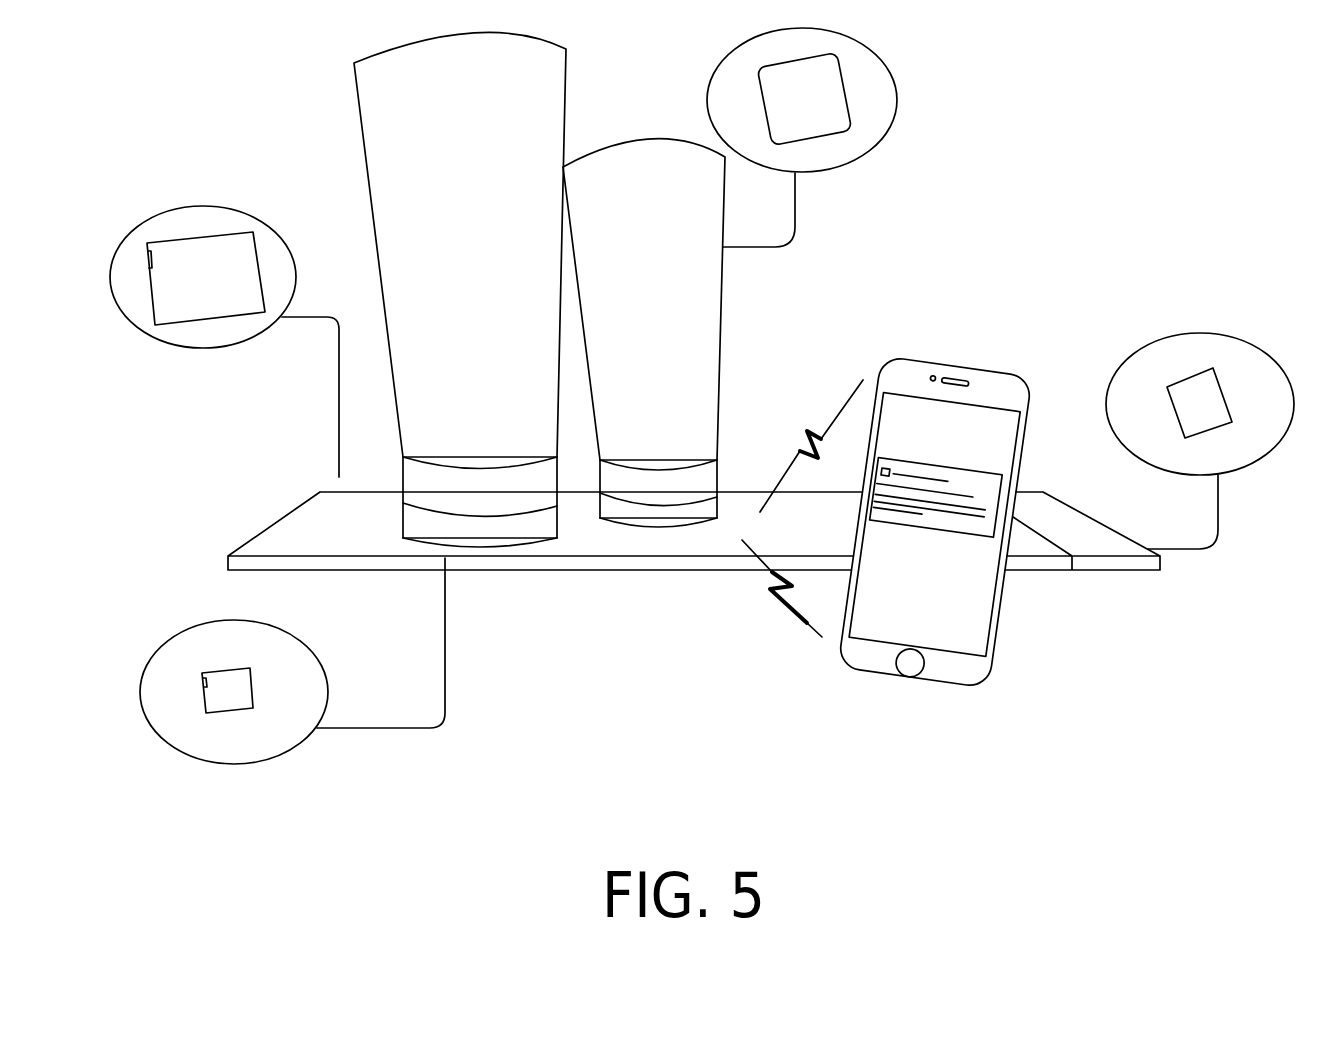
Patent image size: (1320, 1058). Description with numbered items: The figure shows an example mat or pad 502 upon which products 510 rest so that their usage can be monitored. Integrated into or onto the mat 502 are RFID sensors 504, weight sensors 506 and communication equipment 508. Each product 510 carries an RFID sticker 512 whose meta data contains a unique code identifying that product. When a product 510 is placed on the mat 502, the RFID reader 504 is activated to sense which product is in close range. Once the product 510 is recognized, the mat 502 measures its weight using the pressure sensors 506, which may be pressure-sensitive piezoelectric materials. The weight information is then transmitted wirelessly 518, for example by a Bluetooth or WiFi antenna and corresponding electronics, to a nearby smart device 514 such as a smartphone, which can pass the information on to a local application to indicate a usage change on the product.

The mat or pad 502 is at (245, 562).
The RFID sensor 504 is at (215, 342).
The weight sensor 506 is at (223, 750).
The communication equipment 508 is at (1202, 467).
The product 510 is at (432, 446).
The RFID sticker 512 is at (840, 121).
The smart device 514 is at (880, 628).
The wireless transmission 518 is at (775, 598).